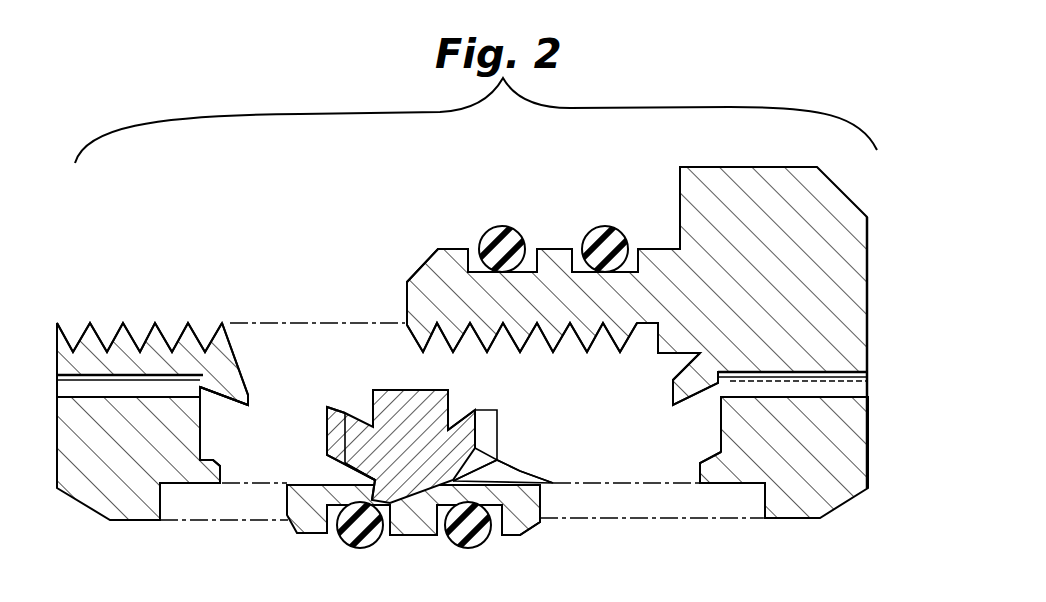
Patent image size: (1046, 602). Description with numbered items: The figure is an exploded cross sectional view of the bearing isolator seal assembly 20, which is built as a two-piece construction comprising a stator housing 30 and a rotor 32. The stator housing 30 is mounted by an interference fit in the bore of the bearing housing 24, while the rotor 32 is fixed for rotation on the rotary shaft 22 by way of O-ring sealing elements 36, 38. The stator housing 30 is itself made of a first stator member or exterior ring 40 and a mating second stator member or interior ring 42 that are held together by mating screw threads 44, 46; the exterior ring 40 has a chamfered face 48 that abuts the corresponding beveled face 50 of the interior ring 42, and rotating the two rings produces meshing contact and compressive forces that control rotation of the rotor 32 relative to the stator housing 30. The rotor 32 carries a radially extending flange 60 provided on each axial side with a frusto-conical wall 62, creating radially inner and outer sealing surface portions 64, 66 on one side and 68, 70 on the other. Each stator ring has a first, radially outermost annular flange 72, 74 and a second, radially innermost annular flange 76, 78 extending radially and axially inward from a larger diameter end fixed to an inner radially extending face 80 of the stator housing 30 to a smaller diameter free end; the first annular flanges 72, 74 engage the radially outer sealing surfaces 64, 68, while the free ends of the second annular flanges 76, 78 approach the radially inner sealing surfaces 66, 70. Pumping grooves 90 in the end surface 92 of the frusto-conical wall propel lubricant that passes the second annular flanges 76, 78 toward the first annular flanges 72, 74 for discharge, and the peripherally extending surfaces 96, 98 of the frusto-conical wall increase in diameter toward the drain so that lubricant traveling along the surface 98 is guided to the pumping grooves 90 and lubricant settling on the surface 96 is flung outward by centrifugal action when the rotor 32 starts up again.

The seal assembly 20 is at (530, 193).
The rotary shaft 22 is at (721, 435).
The bearing housing 24 is at (842, 387).
The stator housing 30 is at (442, 235).
The rotor 32 is at (405, 535).
The O-ring sealing element 36 is at (350, 548).
The O-ring sealing element 38 is at (470, 548).
The first stator member or exterior ring 40 is at (838, 265).
The second stator member or interior ring 42 is at (65, 457).
The mating screw threads 44 is at (147, 333).
The mating screw threads 46 is at (582, 352).
The chamfered face 48 is at (660, 335).
The beveled face 50 is at (220, 322).
The radially extending flange 60 is at (412, 390).
The frusto-conical wall 62 is at (338, 403).
The radially outer sealing surface portion 64 is at (375, 392).
The radially inner sealing surface portion 66 is at (375, 481).
The radially outer sealing surface portion 68 is at (463, 415).
The radially inner sealing surface portion 70 is at (540, 482).
The first radially outermost annular flange 72 is at (253, 390).
The first radially outermost annular flange 74 is at (668, 380).
The second radially innermost annular flange 76 is at (218, 472).
The second radially innermost annular flange 78 is at (700, 467).
The inner radially extending face 80 is at (200, 427).
The pumping grooves 90 is at (493, 438).
The end surface 92 is at (498, 410).
The peripherally extending surface 96 is at (350, 405).
The peripherally extending surface 98 is at (477, 418).